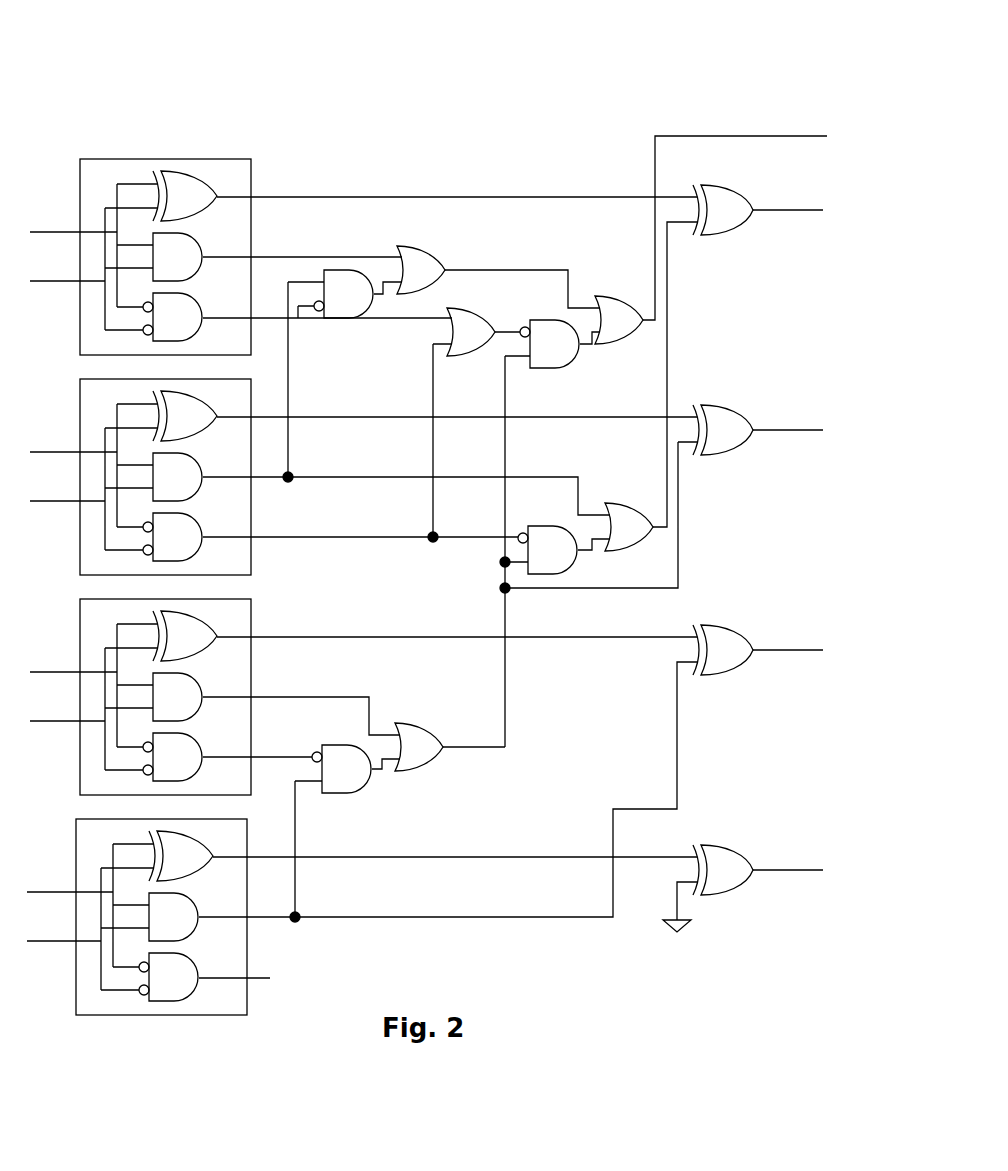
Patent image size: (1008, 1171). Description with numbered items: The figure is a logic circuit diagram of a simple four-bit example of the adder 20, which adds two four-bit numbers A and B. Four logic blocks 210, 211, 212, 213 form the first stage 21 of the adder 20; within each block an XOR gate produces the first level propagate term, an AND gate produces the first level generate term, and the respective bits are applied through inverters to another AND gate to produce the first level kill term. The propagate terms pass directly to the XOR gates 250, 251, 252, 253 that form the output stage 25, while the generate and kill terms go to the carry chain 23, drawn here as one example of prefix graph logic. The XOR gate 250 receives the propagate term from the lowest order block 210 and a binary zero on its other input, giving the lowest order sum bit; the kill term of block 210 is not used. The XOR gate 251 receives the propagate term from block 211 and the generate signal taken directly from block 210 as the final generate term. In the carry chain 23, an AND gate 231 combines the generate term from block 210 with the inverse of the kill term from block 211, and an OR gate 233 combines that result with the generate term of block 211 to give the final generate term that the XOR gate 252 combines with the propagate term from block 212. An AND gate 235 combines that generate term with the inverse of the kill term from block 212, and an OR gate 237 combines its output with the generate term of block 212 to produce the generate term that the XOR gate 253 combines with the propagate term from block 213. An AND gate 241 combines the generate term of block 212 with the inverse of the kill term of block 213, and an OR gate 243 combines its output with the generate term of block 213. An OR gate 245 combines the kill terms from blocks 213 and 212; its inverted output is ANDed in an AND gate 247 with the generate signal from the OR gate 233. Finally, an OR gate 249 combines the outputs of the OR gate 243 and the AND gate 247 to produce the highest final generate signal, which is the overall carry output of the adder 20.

The adder 20 is at (712, 68).
The first stage 21 is at (263, 98).
The logic block 21 sub 3 213 is at (65, 157).
The logic block 21 sub 2 212 is at (78, 376).
The logic block 21 sub 1 211 is at (78, 596).
The logic block 21 sub 0 210 is at (75, 825).
The carry chain 23 is at (631, 137).
The AND gate 231 is at (346, 794).
The OR gate 233 is at (420, 773).
The AND gate 235 is at (540, 526).
The OR gate 237 is at (615, 502).
The AND gate 241 is at (336, 269).
The OR gate 243 is at (407, 246).
The OR gate 245 is at (456, 356).
The AND gate 247 is at (556, 369).
The OR gate 249 is at (606, 295).
The output stage 25 is at (820, 956).
The XOR gate 25 sub 3 253 is at (728, 237).
The XOR gate 25 sub 2 252 is at (726, 457).
The XOR gate 25 sub 1 251 is at (726, 677).
The XOR gate 25 sub 0 250 is at (726, 897).